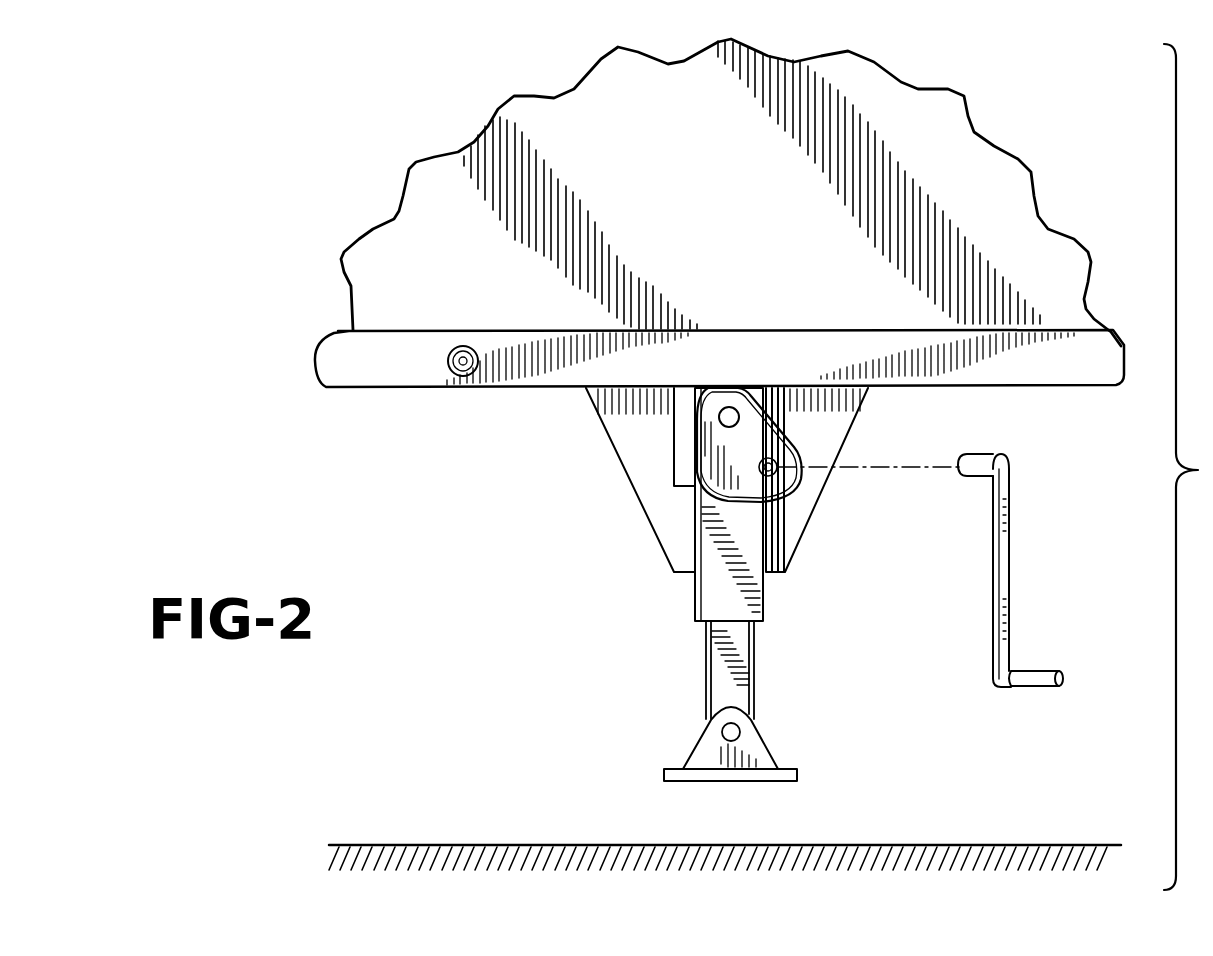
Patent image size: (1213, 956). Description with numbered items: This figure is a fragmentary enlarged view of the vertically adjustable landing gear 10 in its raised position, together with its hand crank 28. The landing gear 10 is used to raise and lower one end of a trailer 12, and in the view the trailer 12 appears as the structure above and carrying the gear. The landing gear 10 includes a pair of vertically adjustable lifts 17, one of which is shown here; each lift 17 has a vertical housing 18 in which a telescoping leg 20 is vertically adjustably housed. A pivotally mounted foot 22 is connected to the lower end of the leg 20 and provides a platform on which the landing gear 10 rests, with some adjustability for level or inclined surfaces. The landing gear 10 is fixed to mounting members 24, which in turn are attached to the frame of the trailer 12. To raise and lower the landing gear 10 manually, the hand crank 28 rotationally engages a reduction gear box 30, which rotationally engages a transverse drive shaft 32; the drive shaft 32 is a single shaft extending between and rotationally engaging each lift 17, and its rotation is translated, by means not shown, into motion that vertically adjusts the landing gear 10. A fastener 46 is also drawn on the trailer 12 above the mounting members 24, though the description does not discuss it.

The landing gear 10 is at (604, 647).
The trailer 12 is at (401, 228).
The vertically adjustable lift 17 is at (747, 584).
The vertical housing 18 is at (711, 605).
The telescoping leg 20 is at (719, 678).
The foot 22 is at (701, 752).
The mounting members 24 is at (683, 439).
The hand crank 28 is at (1003, 560).
The reduction gear box 30 is at (679, 422).
The transverse drive shaft 32 is at (728, 409).
The fastener 46 is at (463, 347).